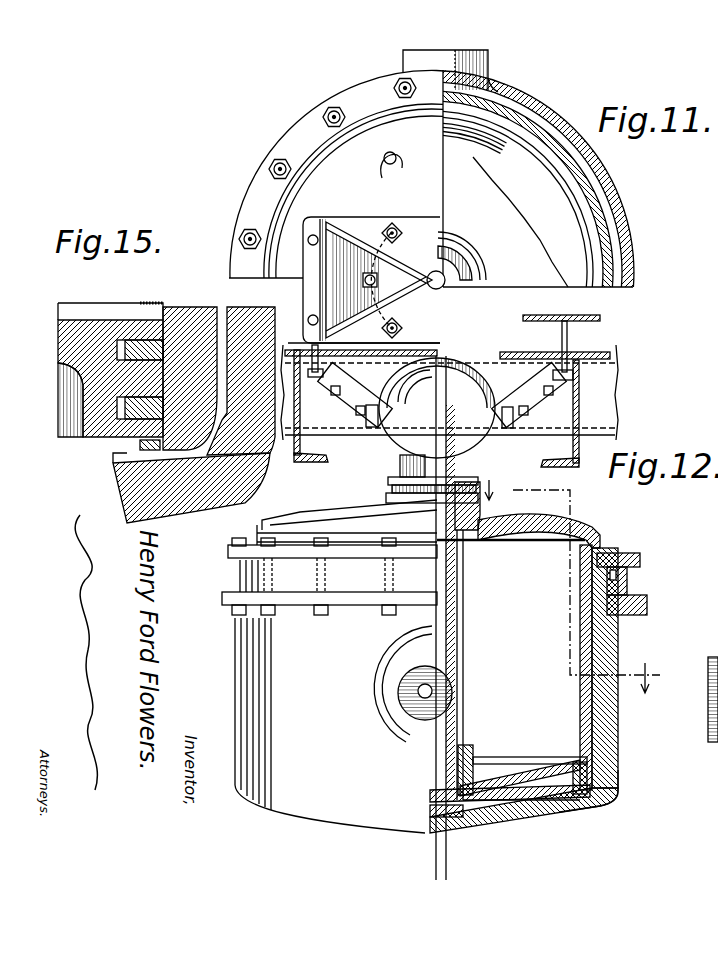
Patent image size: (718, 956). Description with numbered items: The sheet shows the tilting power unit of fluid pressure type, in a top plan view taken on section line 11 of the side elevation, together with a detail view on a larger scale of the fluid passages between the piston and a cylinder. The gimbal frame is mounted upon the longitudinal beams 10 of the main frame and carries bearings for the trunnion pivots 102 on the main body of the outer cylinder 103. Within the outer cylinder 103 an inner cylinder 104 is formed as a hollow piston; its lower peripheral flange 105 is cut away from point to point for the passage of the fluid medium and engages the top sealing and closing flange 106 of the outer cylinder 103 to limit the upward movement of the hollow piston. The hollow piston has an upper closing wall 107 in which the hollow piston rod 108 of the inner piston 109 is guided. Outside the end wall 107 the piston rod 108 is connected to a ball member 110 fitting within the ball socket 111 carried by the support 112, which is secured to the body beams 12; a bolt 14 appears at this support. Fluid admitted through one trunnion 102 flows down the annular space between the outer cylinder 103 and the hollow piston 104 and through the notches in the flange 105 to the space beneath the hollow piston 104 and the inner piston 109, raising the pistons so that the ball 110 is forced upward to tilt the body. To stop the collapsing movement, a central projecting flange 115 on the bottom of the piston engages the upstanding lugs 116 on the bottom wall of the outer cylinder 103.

In FIG. 11, the longitudinal beams 10 is at (606, 192).
In FIG. 12, the section line 11 is at (582, 588).
In FIG. 12, the body beams 12 is at (310, 452).
In FIG. 12, the bolt 14 is at (600, 319).
In FIG. 11, the trunnion pivots 102 is at (489, 66).
In FIG. 12, the trunnion pivots 102 is at (383, 672).
In FIG. 12, the outer cylinder 103 is at (606, 650).
In FIG. 15, the outer cylinder 103 is at (256, 455).
In FIG. 12, the inner cylinder 104 is at (592, 640).
In FIG. 15, the inner cylinder 104 is at (190, 307).
In FIG. 11, the lower peripheral flange 105 is at (577, 163).
In FIG. 12, the lower peripheral flange 105 is at (620, 796).
In FIG. 15, the lower peripheral flange 105 is at (212, 452).
In FIG. 12, the top sealing and closing flange 106 is at (625, 586).
In FIG. 12, the upper closing wall 107 is at (530, 528).
In FIG. 11, the hollow piston rod 108 is at (456, 254).
In FIG. 12, the hollow piston rod 108 is at (461, 677).
In FIG. 11, the inner piston 109 is at (488, 249).
In FIG. 12, the inner piston 109 is at (508, 777).
In FIG. 15, the inner piston 109 is at (98, 303).
In FIG. 12, the ball member 110 is at (437, 430).
In FIG. 12, the ball socket 111 is at (473, 362).
In FIG. 11, the support 112 is at (394, 225).
In FIG. 12, the support 112 is at (522, 390).
In FIG. 12, the central projecting flange 115 is at (463, 800).
In FIG. 12, the upstanding lugs 116 is at (488, 826).